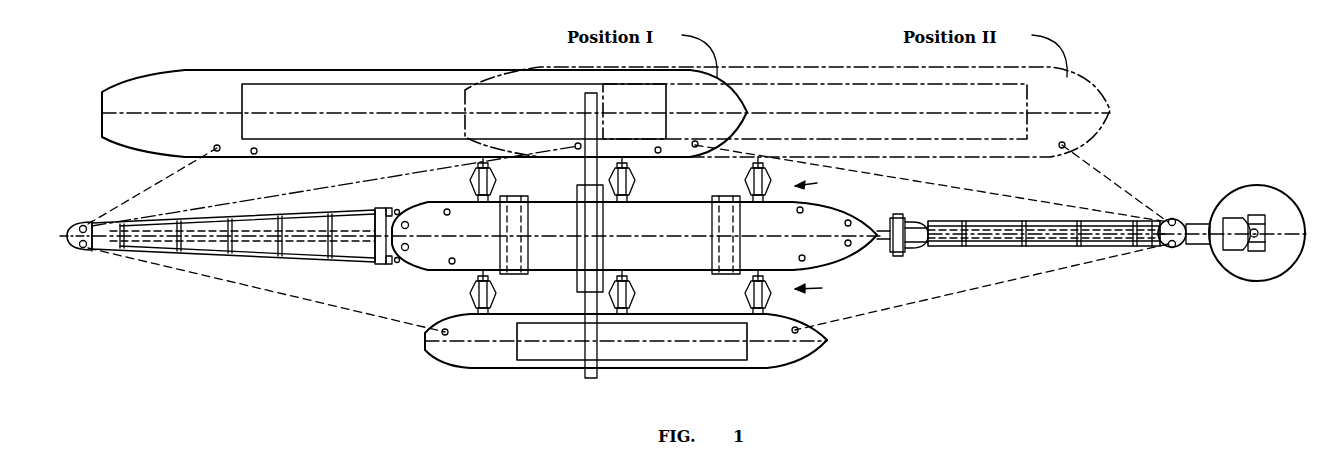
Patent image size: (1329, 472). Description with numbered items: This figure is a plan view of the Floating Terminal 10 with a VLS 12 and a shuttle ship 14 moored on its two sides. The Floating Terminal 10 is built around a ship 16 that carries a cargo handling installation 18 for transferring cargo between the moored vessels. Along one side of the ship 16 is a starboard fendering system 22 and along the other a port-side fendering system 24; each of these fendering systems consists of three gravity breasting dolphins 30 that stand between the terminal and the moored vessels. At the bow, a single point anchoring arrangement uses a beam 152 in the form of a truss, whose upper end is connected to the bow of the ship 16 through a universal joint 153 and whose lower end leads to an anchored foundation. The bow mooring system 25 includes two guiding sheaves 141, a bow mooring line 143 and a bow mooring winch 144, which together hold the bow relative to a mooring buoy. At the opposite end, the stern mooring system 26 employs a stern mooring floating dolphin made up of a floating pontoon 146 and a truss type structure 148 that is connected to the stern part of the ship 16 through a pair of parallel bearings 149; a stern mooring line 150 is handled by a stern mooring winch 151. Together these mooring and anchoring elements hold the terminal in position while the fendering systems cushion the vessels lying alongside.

The Floating Terminal 10 is at (1142, 77).
The VLS 12 is at (379, 80).
The shuttle ship 14 is at (783, 350).
The ship 16 is at (658, 228).
The cargo handling installation 18 is at (585, 273).
The fendering system starboard 22 is at (820, 290).
The fendering system port side 24 is at (818, 185).
The bow mooring system 25 is at (1127, 267).
The stern mooring system 26 is at (268, 308).
The gravity breasting dolphin 30 is at (648, 190).
The guiding sheaves 141 is at (1172, 220).
The bow mooring line 143 is at (1060, 200).
The bow mooring winch 144 is at (852, 228).
The floating pontoon 146 is at (83, 252).
The truss type structure 148 is at (362, 211).
The parallel bearings 149 is at (392, 265).
The stern mooring line 150 is at (261, 193).
The stern mooring winch 151 is at (389, 215).
The beam 152 is at (1017, 228).
The universal joint 153 is at (898, 252).